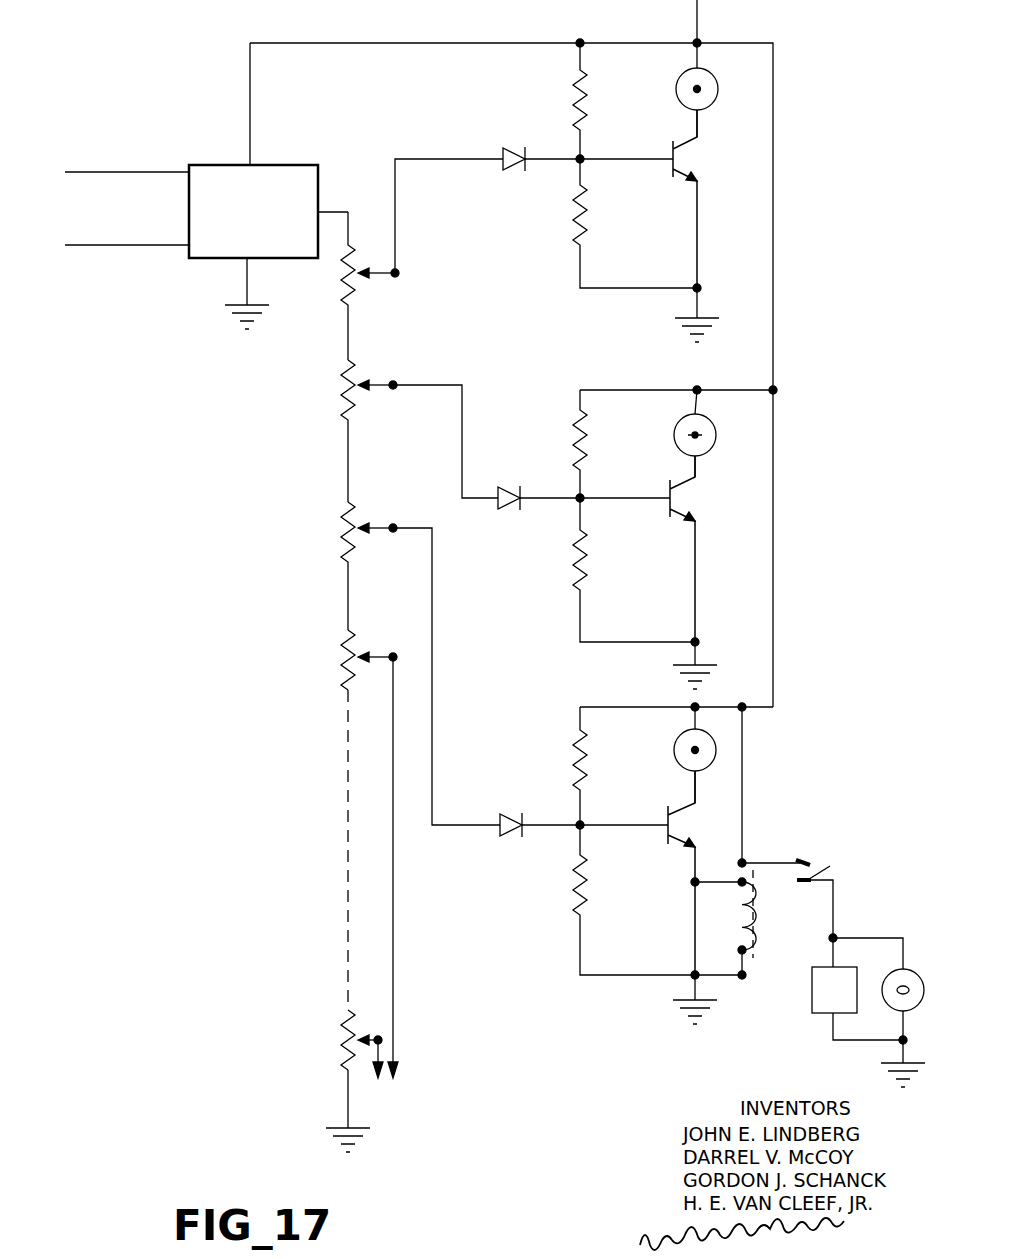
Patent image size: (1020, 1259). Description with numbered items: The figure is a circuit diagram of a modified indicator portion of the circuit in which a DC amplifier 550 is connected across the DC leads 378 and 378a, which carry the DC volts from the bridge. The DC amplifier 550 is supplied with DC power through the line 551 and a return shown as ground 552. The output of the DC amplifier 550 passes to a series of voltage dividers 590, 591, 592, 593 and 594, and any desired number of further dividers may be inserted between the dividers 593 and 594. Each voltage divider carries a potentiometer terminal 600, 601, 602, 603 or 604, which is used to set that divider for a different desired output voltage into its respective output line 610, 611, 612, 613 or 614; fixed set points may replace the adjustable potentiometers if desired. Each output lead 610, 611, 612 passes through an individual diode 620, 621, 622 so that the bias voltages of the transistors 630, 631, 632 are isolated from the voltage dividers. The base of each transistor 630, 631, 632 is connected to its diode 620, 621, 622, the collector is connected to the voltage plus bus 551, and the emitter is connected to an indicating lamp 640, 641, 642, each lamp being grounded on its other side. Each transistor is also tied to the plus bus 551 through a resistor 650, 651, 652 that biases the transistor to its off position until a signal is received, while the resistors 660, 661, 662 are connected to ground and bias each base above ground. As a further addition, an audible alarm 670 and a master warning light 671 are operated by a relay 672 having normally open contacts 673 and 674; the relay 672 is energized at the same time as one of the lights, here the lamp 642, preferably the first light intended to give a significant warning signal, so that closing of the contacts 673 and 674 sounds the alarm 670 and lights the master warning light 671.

The DC lead 378 is at (107, 172).
The DC lead 378a is at (105, 245).
The DC amplifier 550 is at (278, 165).
The voltage plus bus line 551 is at (385, 43).
The ground return 552 is at (225, 322).
The voltage divider 590 is at (347, 289).
The voltage divider 591 is at (341, 398).
The voltage divider 592 is at (341, 546).
The voltage divider 593 is at (341, 673).
The voltage divider 594 is at (339, 1063).
The potentiometer terminal 600 is at (392, 279).
The potentiometer terminal 601 is at (385, 388).
The potentiometer terminal 602 is at (381, 524).
The potentiometer terminal 603 is at (374, 654).
The potentiometer terminal 604 is at (370, 1036).
The output line 610 is at (395, 209).
The output line 611 is at (432, 385).
The output line 612 is at (434, 655).
The output line 613 is at (395, 960).
The output line 614 is at (395, 1048).
The diode 620 is at (508, 148).
The diode 621 is at (509, 487).
The diode 622 is at (510, 808).
The transistor 630 is at (673, 146).
The transistor 631 is at (670, 486).
The transistor 632 is at (668, 812).
The indicating lamp 640 is at (740, 90).
The indicating lamp 641 is at (738, 440).
The indicating lamp 642 is at (712, 758).
The resistor 650 is at (586, 98).
The resistor 651 is at (587, 438).
The resistor 652 is at (588, 758).
The resistor 660 is at (572, 228).
The resistor 661 is at (574, 572).
The resistor 662 is at (573, 900).
The audible alarm 670 is at (810, 1000).
The master warning light 671 is at (916, 969).
The relay 672 is at (770, 912).
The normally open contact 673 is at (808, 858).
The normally open contact 674 is at (815, 878).